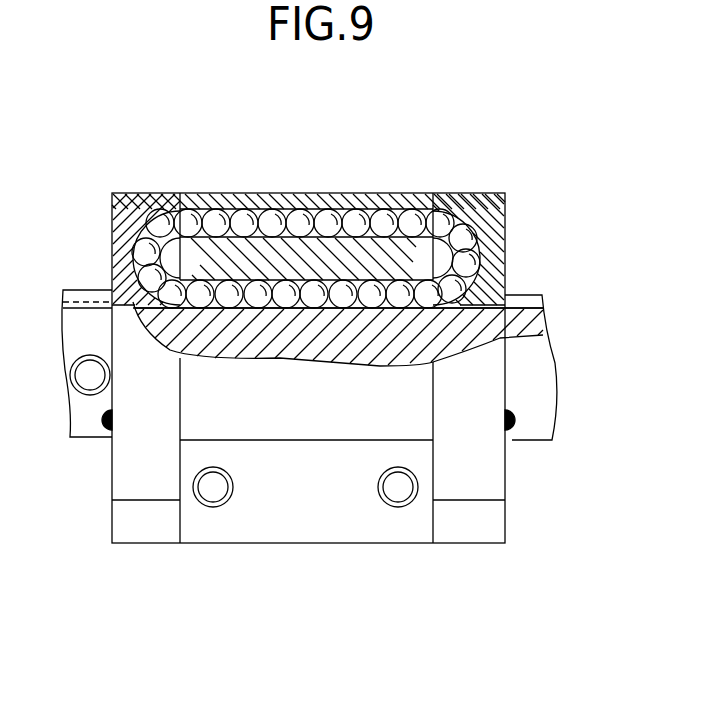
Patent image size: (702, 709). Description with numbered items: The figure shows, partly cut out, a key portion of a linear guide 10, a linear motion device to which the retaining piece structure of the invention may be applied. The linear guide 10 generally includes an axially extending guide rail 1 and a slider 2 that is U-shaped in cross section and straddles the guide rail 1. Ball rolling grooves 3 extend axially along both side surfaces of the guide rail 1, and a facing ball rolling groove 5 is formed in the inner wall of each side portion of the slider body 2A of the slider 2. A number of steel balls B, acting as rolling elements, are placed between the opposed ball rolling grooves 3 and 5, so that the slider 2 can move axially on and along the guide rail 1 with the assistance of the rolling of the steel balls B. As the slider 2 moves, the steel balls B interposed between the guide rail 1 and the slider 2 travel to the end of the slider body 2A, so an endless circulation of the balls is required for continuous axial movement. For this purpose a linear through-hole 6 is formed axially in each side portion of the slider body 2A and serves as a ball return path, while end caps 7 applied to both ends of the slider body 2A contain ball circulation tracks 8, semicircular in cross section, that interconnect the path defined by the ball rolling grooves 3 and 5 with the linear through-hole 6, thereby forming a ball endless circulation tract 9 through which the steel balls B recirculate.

The linear guide 10 is at (405, 135).
The guide rail 1 is at (538, 383).
The slider 2 is at (152, 612).
The slider body 2A is at (327, 527).
The end cap 7 is at (160, 530).
The ball endless circulation tract 9 is at (575, 138).
The linear through-hole 6 is at (480, 195).
The ball circulation track 8 is at (503, 223).
The ball rolling groove 5 is at (480, 272).
The ball rolling groove 3 is at (520, 297).
The steel ball B is at (215, 218).